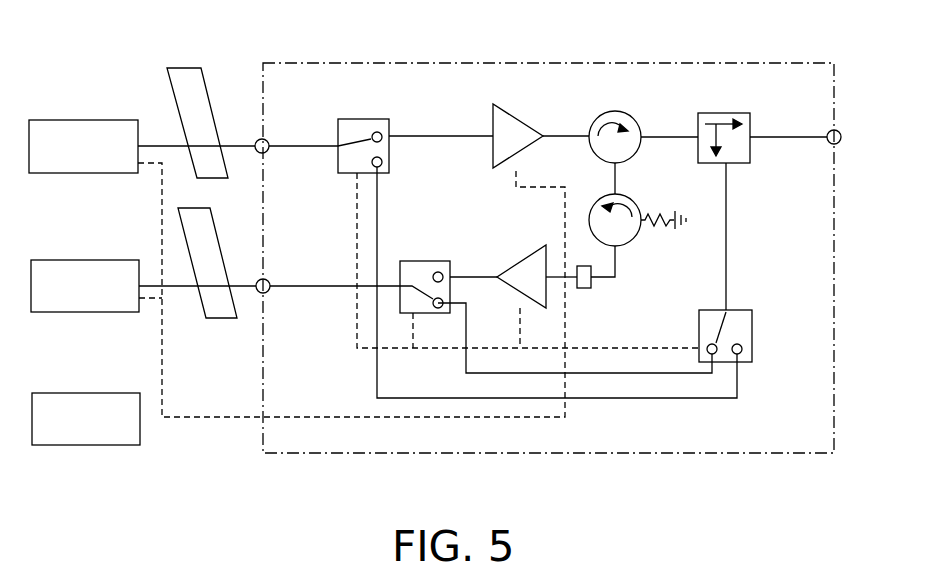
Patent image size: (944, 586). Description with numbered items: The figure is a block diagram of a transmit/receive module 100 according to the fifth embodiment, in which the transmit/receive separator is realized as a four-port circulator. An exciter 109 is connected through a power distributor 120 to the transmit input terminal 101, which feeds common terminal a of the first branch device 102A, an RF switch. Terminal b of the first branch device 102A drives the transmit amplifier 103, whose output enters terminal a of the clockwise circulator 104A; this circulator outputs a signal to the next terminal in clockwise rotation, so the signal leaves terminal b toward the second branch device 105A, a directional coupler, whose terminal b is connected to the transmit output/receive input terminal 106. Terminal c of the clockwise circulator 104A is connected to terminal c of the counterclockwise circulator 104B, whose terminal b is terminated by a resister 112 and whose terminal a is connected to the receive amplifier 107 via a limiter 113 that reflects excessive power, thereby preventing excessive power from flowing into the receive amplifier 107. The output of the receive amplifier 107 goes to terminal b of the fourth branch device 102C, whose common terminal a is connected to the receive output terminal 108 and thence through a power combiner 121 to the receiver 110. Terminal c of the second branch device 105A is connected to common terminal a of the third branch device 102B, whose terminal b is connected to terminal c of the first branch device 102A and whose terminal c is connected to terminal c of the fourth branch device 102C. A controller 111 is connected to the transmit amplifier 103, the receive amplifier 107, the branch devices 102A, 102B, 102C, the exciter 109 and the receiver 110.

The transmit/receive module 100 is at (437, 48).
The transmit input terminal 101 is at (266, 139).
The first branch device 102A is at (359, 119).
The third branch device 102B is at (708, 310).
The fourth branch device 102C is at (425, 261).
The transmit amplifier 103 is at (509, 115).
The clockwise circulator 104A is at (627, 120).
The counterclockwise circulator 104B is at (630, 199).
The second branch device 105A is at (716, 113).
The transmit output/receive input terminal 106 is at (840, 131).
The receive amplifier 107 is at (519, 250).
The receive output terminal 108 is at (267, 279).
The exciter 109 is at (85, 120).
The receiver 110 is at (85, 260).
The controller 111 is at (85, 393).
The resister 112 is at (651, 216).
The limiter 113 is at (587, 288).
The power distributor 120 is at (188, 68).
The power combiner 121 is at (215, 318).